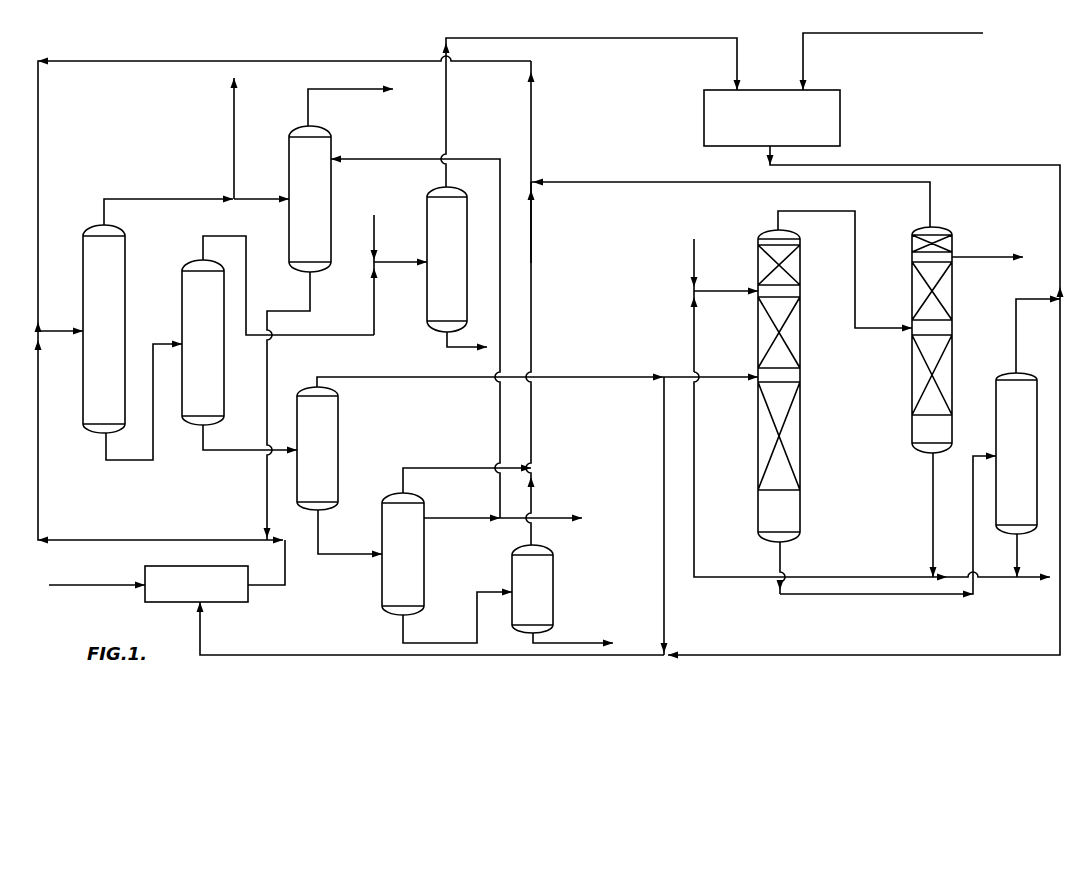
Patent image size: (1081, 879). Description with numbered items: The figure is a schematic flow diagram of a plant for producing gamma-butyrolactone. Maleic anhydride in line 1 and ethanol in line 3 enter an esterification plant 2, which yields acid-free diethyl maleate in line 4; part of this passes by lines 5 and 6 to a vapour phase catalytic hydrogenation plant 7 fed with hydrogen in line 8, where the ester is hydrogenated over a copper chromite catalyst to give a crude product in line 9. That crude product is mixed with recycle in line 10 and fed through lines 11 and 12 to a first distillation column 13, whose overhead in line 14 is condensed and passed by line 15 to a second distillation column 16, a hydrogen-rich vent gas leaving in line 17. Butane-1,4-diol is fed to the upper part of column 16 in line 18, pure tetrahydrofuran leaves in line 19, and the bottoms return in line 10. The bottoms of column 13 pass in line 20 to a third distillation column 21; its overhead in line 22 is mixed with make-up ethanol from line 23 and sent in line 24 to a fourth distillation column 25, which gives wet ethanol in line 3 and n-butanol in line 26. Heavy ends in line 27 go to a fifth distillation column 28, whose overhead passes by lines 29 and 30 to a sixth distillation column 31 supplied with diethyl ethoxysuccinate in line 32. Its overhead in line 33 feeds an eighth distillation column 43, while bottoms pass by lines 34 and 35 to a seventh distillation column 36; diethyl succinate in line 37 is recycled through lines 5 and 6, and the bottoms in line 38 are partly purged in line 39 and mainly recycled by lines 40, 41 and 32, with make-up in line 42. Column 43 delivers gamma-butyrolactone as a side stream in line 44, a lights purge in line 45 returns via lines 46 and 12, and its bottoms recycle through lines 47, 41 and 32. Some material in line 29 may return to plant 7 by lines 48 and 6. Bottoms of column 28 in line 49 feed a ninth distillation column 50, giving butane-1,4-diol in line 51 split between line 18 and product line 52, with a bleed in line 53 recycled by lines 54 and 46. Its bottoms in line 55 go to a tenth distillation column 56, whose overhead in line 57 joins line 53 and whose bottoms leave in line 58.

The line 1 is at (910, 36).
The esterification plant 2 is at (840, 112).
The line 3 is at (658, 37).
The line 4 is at (768, 149).
The line 5 is at (727, 654).
The line 6 is at (352, 655).
The vapour phase catalytic hydrogenation plant 7 is at (241, 603).
The line 8 is at (100, 587).
The line 9 is at (295, 568).
The line 10 is at (267, 483).
The line 11 is at (40, 487).
The line 12 is at (62, 332).
The first distillation column 13 is at (83, 277).
The line 14 is at (135, 198).
The line 15 is at (253, 198).
The second distillation column 16 is at (333, 192).
The line 17 is at (233, 127).
The line 18 is at (388, 158).
The line 19 is at (352, 90).
The line 20 is at (135, 460).
The third distillation column 21 is at (182, 298).
The line 22 is at (225, 236).
The line 23 is at (375, 222).
The line 24 is at (390, 263).
The fourth distillation column 25 is at (427, 299).
The line 26 is at (453, 348).
The line 27 is at (233, 449).
The fifth distillation column 28 is at (338, 415).
The line 29 is at (557, 375).
The line 30 is at (717, 375).
The sixth distillation column 31 is at (802, 373).
The line 32 is at (715, 290).
The line 33 is at (820, 212).
The line 34 is at (780, 552).
The line 35 is at (878, 595).
The seventh distillation column 36 is at (997, 402).
The line 37 is at (1016, 328).
The line 38 is at (1017, 553).
The line 39 is at (1034, 579).
The line 40 is at (1000, 578).
The line 41 is at (855, 577).
The line 42 is at (694, 253).
The eighth distillation column 43 is at (952, 290).
The line 44 is at (980, 255).
The line 45 is at (932, 200).
The line 46 is at (147, 67).
The line 47 is at (932, 488).
The line 48 is at (663, 513).
The line 49 is at (318, 532).
The ninth distillation column 50 is at (425, 562).
The line 51 is at (466, 516).
The line 52 is at (553, 517).
The line 53 is at (429, 468).
The line 54 is at (534, 263).
The line 55 is at (442, 642).
The tenth distillation column 56 is at (553, 578).
The line 57 is at (540, 532).
The line 58 is at (575, 642).